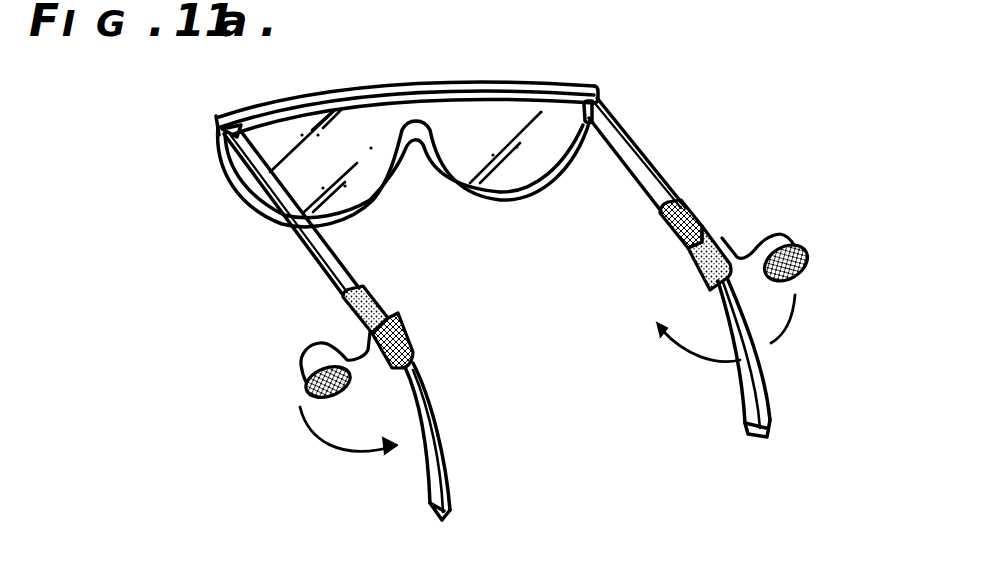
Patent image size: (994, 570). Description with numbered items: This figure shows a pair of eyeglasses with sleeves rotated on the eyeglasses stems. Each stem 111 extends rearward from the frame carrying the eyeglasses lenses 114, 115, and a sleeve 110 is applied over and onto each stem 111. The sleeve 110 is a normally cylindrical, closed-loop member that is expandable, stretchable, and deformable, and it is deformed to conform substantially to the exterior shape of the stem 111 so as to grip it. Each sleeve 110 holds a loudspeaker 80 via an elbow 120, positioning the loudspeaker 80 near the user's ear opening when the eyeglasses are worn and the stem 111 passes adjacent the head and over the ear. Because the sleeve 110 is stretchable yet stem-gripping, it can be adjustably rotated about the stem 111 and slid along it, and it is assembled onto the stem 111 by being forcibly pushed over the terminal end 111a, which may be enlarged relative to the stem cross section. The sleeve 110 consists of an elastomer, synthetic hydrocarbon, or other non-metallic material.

The loudspeaker 80 is at (304, 389).
The sleeve 110 is at (345, 309).
The stem 111 is at (316, 254).
The terminal end 111a is at (430, 500).
The eyeglasses lens 114 is at (328, 118).
The eyeglasses lens 115 is at (487, 108).
The elbow 120 is at (325, 344).